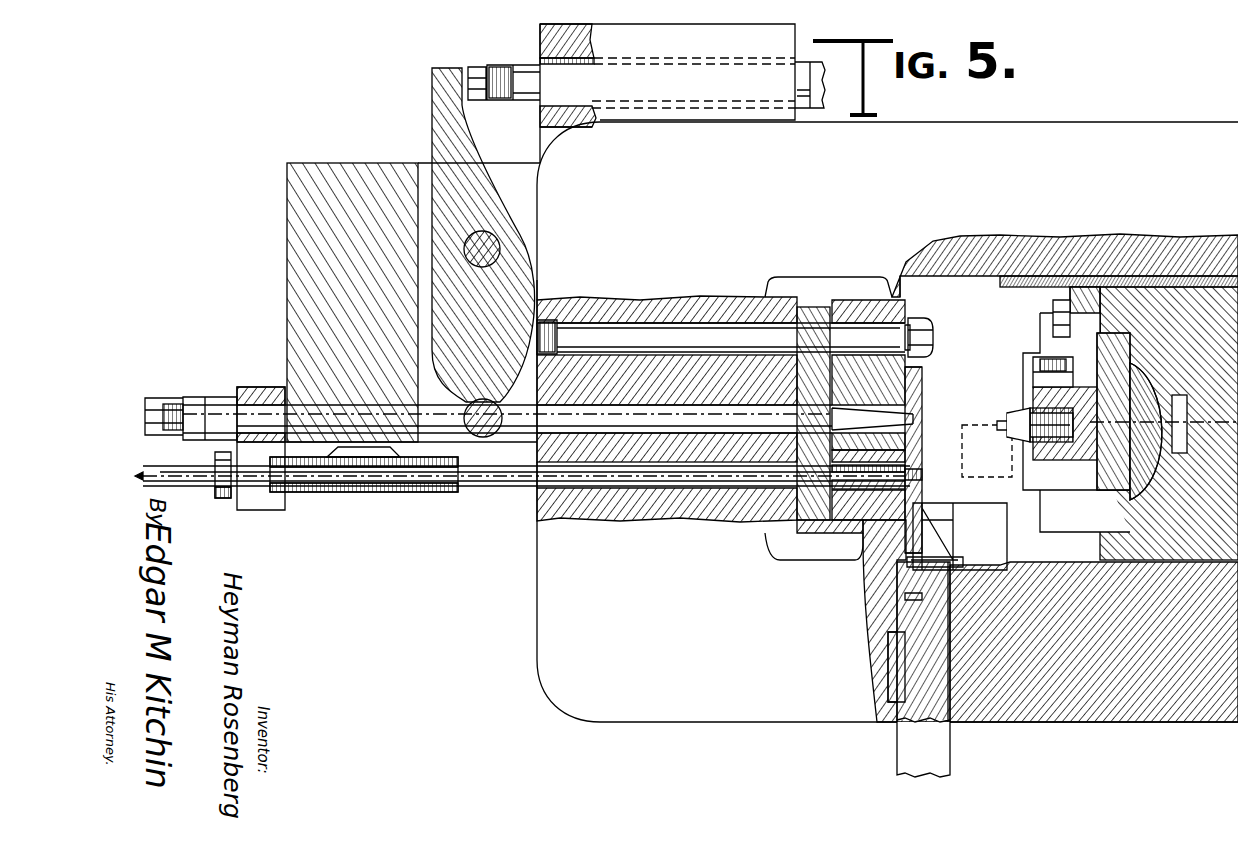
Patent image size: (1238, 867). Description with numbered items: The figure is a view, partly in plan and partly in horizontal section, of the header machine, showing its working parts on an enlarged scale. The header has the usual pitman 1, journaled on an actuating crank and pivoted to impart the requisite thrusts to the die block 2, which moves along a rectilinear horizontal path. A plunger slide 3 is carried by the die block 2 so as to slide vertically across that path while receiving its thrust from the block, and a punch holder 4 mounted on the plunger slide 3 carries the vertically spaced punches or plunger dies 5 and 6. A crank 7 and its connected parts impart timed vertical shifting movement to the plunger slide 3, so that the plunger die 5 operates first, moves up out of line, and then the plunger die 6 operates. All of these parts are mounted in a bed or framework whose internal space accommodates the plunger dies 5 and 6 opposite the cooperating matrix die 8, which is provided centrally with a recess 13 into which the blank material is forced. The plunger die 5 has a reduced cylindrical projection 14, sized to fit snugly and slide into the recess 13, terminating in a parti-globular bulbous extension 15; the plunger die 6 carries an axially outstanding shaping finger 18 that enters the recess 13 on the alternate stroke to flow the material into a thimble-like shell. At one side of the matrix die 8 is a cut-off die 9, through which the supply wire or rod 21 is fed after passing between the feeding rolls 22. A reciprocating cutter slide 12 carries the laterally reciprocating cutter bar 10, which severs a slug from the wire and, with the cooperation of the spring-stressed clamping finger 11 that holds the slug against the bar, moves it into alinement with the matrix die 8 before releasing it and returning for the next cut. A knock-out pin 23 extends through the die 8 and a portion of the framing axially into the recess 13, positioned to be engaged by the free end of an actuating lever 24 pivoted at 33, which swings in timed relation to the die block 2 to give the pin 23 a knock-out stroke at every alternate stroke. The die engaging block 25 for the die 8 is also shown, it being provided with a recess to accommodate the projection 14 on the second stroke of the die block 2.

The pitman 1 is at (1215, 424).
The die block 2 is at (1130, 545).
The plunger slide 3 is at (1147, 417).
The punch holder 4 is at (1073, 450).
The plunger die 5 is at (1010, 440).
The plunger die 6 is at (1033, 437).
The crank 7 is at (737, 373).
The matrix die 8 is at (900, 438).
The cut-off die 9 is at (843, 518).
The cutter bar 10 is at (920, 487).
The clamping finger 11 is at (920, 466).
The cutter slide 12 is at (930, 670).
The recess 13 is at (913, 413).
The projection 14 is at (1012, 431).
The bulbous extension 15 is at (986, 431).
The shaping finger 18 is at (1000, 420).
The supply wire or rod 21 is at (510, 473).
The feeding rolls 22 is at (390, 483).
The knock-out pin 23 is at (757, 420).
The actuating lever 24 is at (465, 325).
The die engaging block 25 is at (915, 370).
The pivot 33 is at (493, 240).